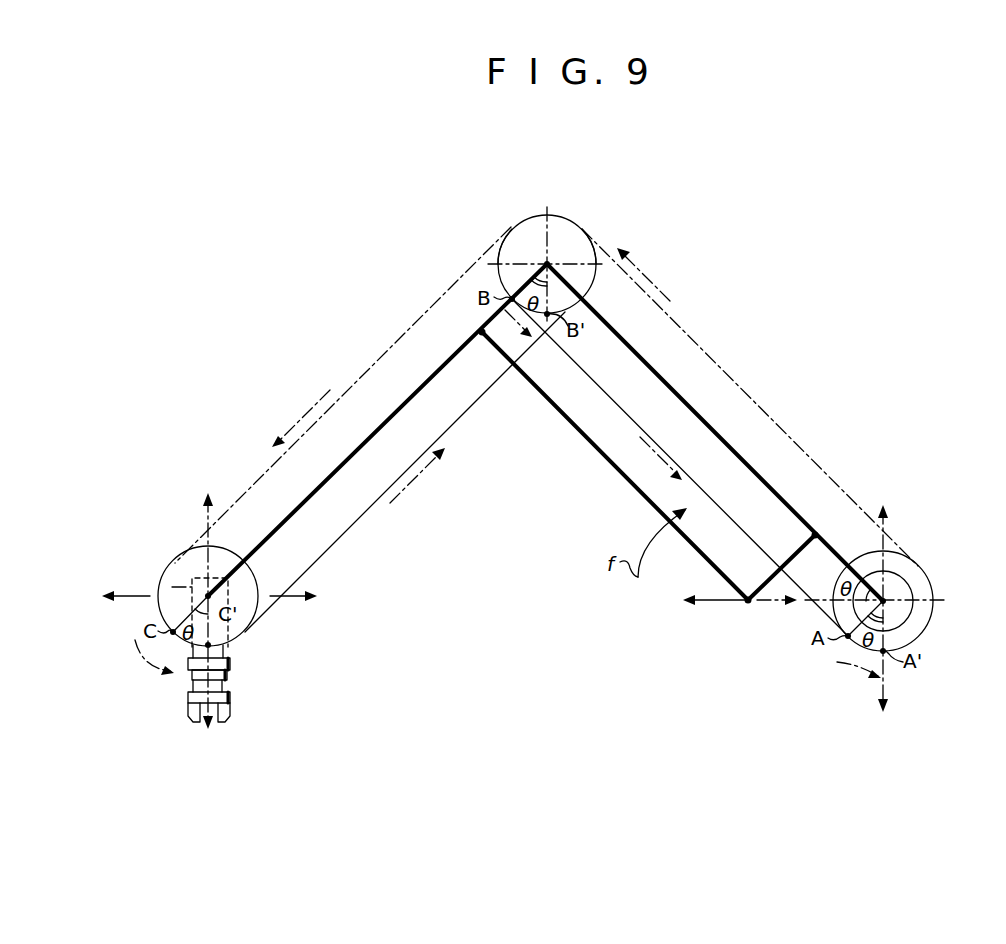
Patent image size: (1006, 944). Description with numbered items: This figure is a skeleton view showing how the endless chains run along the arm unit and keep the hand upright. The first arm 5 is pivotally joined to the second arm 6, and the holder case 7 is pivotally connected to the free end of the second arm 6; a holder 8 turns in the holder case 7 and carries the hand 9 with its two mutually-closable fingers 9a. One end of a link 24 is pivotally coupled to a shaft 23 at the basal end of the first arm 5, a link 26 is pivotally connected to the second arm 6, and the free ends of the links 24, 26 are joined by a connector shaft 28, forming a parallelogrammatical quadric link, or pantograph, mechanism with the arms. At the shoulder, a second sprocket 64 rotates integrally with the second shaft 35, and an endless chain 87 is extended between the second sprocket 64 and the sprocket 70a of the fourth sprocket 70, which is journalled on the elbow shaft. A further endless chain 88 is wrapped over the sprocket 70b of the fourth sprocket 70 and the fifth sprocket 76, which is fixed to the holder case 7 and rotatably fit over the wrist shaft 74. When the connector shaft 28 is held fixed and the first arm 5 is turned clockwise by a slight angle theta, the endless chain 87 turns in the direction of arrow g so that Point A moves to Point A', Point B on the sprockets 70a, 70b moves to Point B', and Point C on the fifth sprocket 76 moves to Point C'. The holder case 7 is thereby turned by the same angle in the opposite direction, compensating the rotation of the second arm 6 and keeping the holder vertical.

The first arm 5 is at (763, 477).
The second arm 6 is at (406, 404).
The holder case 7 is at (159, 584).
The holder 8 is at (230, 666).
The hand 9 is at (188, 699).
The fingers 9a is at (225, 719).
The shaft 23 is at (816, 534).
The link 24 is at (482, 337).
The link 26 is at (602, 458).
The connector shaft 28 is at (748, 604).
The second shaft 35 is at (900, 612).
The second sprocket 64 is at (932, 586).
The fourth sprocket 70 is at (588, 220).
The sprocket 70a is at (566, 224).
The sprocket 70b is at (517, 224).
The wrist shaft 74 is at (216, 596).
The fifth sprocket 76 is at (179, 562).
The endless chain 87 is at (733, 377).
The endless chain 88 is at (394, 343).